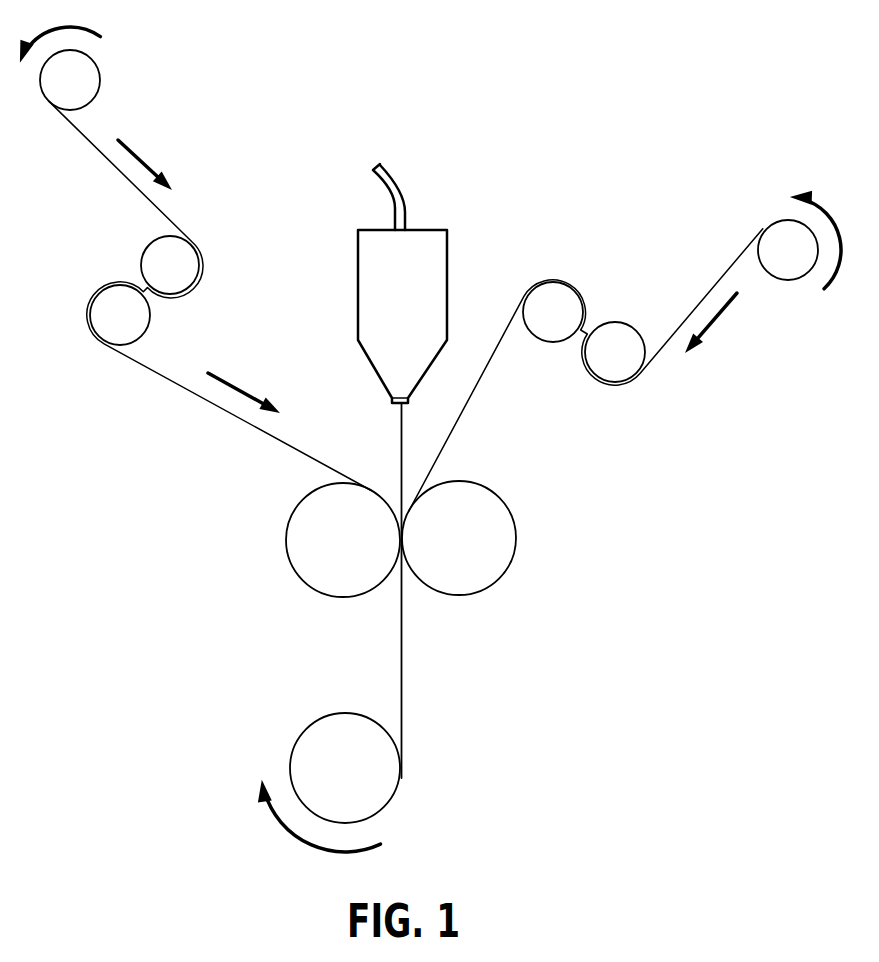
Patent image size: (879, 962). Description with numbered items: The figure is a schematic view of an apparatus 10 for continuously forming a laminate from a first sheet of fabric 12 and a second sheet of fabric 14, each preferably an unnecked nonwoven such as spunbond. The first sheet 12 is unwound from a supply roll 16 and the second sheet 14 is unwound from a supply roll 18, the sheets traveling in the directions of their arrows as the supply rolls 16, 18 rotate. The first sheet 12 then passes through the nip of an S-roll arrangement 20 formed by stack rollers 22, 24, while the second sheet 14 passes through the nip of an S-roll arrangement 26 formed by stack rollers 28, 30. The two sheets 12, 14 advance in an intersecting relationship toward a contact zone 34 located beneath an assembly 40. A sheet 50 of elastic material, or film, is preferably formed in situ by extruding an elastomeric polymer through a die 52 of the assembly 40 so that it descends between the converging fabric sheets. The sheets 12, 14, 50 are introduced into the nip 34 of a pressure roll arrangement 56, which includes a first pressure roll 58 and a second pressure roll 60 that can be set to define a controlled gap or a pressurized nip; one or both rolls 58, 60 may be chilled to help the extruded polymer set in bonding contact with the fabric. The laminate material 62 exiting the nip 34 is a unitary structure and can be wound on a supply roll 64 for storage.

The apparatus 10 is at (608, 96).
The first sheet of fabric 12 is at (191, 398).
The second sheet of fabric 14 is at (497, 334).
The supply roll 16 is at (100, 82).
The supply roll 18 is at (791, 281).
The S-roll arrangement 20 is at (137, 293).
The stack roller 22 is at (199, 290).
The stack roller 24 is at (87, 317).
The S-roll arrangement 26 is at (664, 410).
The stack roller 28 is at (620, 321).
The stack roller 30 is at (558, 282).
The contact zone 34 is at (374, 453).
The assembly 40 is at (368, 281).
The sheet of elastic material 50 is at (403, 432).
The die 52 is at (391, 402).
The pressure roll arrangement 56 is at (415, 562).
The first pressure roll 58 is at (305, 585).
The second pressure roll 60 is at (513, 560).
The laminate material 62 is at (403, 690).
The supply roll 64 is at (388, 798).